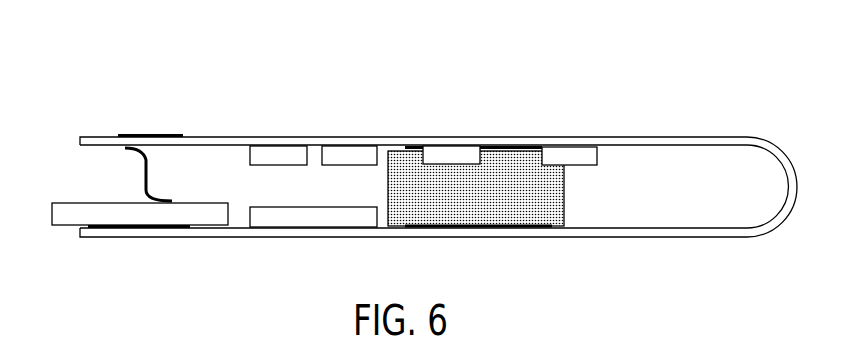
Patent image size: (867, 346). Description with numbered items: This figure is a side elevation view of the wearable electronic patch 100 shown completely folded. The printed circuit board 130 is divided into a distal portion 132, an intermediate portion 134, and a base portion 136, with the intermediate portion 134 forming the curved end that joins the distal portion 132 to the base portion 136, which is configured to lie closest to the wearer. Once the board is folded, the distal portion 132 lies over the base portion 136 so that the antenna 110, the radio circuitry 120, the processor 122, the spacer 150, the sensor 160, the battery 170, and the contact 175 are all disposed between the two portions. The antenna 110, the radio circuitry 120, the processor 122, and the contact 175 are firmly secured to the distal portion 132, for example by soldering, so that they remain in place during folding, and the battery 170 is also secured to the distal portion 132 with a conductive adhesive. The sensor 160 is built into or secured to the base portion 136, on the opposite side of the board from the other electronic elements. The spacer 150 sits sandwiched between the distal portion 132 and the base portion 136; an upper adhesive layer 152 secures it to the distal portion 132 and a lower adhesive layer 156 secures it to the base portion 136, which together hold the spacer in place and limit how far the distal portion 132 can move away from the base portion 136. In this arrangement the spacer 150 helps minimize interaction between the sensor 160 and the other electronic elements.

The wearable electronic patch 100 is at (697, 67).
The antenna 110 is at (155, 134).
The radio circuitry 120 is at (293, 145).
The processor 122 is at (468, 118).
The printed circuit board 130 is at (227, 238).
The distal portion 132 is at (717, 137).
The intermediate portion 134 is at (797, 185).
The base portion 136 is at (592, 227).
The spacer 150 is at (493, 202).
The upper adhesive layer 152 is at (502, 147).
The lower adhesive layer 156 is at (515, 228).
The sensor 160 is at (290, 207).
The battery 170 is at (155, 220).
The contact 175 is at (143, 163).